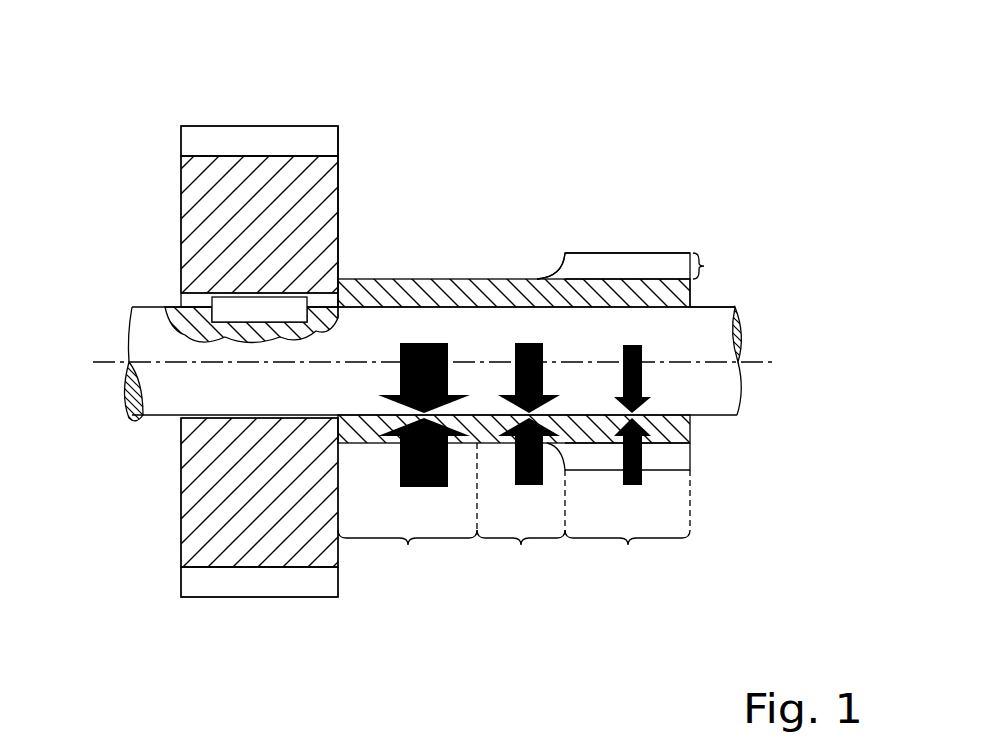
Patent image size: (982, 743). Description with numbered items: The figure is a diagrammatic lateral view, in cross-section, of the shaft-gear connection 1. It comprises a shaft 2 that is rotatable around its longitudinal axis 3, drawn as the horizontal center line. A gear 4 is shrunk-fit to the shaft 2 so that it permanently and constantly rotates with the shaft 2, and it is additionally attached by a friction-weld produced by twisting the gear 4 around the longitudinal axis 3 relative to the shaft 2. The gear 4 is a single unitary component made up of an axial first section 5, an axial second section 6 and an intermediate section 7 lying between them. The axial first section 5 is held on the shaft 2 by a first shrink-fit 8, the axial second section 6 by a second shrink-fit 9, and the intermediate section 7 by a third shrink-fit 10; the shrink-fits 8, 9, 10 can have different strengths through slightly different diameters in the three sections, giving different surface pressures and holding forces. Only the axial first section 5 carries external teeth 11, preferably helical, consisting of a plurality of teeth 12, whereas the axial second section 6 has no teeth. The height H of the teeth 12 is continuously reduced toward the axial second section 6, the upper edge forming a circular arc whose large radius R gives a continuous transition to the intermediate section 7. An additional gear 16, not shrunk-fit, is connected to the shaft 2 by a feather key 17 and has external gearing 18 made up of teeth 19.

The shaft-gear connection 1 is at (782, 255).
The shaft 2 is at (713, 392).
The longitudinal axis 3 is at (117, 357).
The gear 4 is at (518, 272).
The axial first section 5 is at (627, 528).
The axial second section 6 is at (407, 515).
The intermediate section 7 is at (521, 528).
The first shrink-fit 8 is at (670, 310).
The second shrink-fit 9 is at (363, 313).
The third shrink-fit 10 is at (515, 415).
The external teeth 11 is at (658, 246).
The teeth 12 is at (610, 268).
The additional gear 16 is at (180, 210).
The feather key 17 is at (197, 338).
The external gearing 18 is at (342, 143).
The teeth 19 is at (255, 138).
The radius R is at (550, 261).
The height H is at (711, 263).